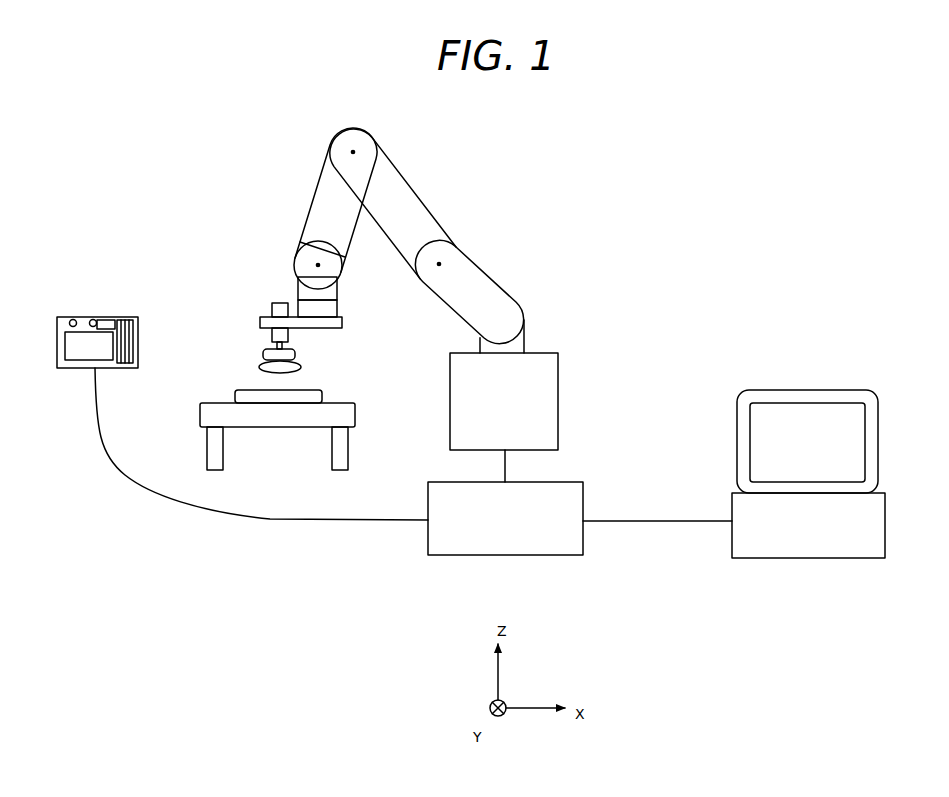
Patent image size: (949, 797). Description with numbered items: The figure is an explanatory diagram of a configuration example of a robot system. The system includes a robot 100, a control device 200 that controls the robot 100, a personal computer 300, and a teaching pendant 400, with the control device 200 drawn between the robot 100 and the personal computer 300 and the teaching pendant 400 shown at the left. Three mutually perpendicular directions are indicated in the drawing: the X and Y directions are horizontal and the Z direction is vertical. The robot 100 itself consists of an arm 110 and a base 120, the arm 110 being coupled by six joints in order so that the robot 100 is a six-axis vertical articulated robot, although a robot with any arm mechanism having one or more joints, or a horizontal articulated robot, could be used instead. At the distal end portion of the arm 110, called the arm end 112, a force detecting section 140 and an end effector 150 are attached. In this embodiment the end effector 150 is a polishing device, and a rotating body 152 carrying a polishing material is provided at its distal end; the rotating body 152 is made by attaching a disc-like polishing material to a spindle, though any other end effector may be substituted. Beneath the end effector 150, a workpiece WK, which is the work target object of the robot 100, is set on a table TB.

The robot 100 is at (428, 289).
The arm 110 is at (463, 275).
The arm end 112 is at (338, 292).
The base 120 is at (558, 380).
The force detecting section 140 is at (338, 310).
The end effector 150 is at (270, 336).
The rotating body 152 is at (300, 353).
The control device 200 is at (572, 482).
The personal computer 300 is at (847, 390).
The teaching pendant 400 is at (97, 317).
The workpiece WK is at (246, 389).
The table TB is at (356, 410).